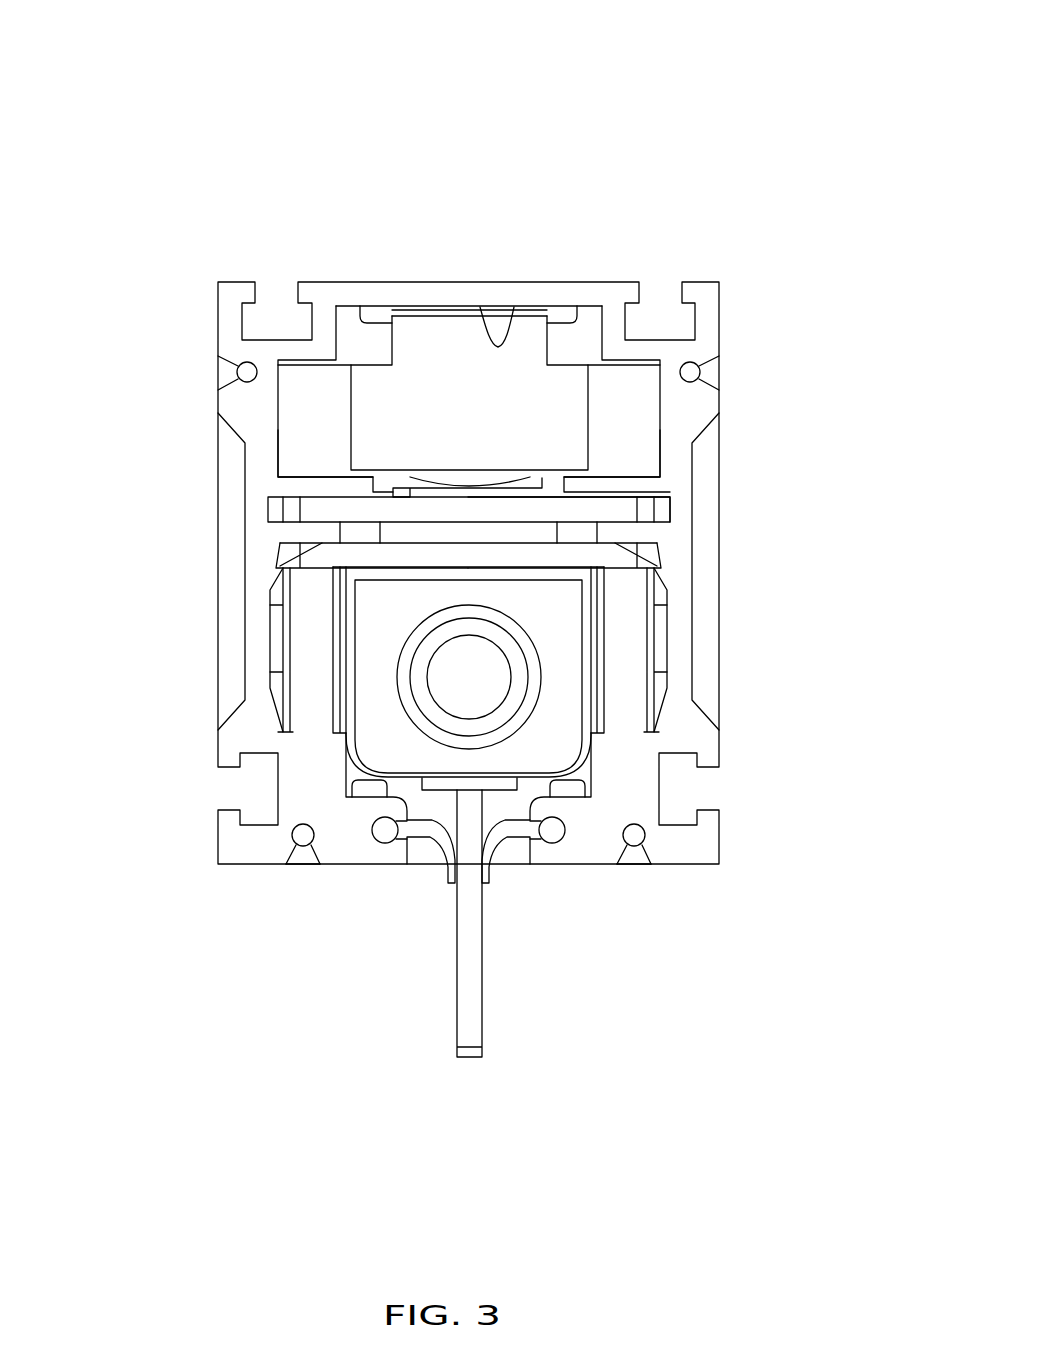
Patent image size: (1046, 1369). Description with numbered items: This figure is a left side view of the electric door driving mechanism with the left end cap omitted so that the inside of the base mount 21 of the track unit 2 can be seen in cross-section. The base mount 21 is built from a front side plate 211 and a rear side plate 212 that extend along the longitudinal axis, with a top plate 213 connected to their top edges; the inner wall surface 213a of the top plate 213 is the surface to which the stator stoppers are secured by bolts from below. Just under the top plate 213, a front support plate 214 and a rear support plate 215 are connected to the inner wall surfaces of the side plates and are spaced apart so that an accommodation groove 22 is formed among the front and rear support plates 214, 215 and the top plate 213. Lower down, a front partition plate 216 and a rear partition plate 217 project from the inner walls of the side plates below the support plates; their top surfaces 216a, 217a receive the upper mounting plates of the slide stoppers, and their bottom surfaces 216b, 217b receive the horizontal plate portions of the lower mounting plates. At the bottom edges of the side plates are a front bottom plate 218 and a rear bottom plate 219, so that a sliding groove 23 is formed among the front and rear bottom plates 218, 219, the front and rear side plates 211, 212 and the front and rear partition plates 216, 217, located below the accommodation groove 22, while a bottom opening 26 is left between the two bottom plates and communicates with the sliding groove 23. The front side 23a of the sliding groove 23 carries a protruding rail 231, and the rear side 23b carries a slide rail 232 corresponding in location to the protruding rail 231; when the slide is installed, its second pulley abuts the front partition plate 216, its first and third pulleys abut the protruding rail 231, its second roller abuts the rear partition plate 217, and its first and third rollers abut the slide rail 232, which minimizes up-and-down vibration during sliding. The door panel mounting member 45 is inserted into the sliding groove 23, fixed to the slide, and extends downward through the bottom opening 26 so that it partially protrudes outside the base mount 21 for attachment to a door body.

The track unit 2 is at (716, 103).
The base mount 21 is at (216, 311).
The accommodation groove 22 is at (373, 356).
The sliding groove 23 is at (579, 772).
The front side of the sliding groove 23a is at (280, 656).
The rear side of the sliding groove 23b is at (657, 656).
The bottom opening 26 is at (507, 844).
The door panel mounting member 45 is at (466, 1058).
The front side plate 211 is at (260, 598).
The rear side plate 212 is at (677, 598).
The top plate 213 is at (447, 290).
The inner wall surface of the top plate 213a is at (505, 340).
The front support plate 214 is at (317, 483).
The rear support plate 215 is at (620, 483).
The front partition plate 216 is at (300, 533).
The top surface of the front partition plate 216a is at (322, 522).
The bottom surface of the front partition plate 216b is at (282, 568).
The rear partition plate 217 is at (637, 533).
The top surface of the rear partition plate 217a is at (615, 522).
The bottom surface of the rear partition plate 217b is at (655, 568).
The front bottom plate 218 is at (340, 848).
The rear bottom plate 219 is at (597, 848).
The protruding rail 231 is at (292, 748).
The slide rail 232 is at (647, 752).